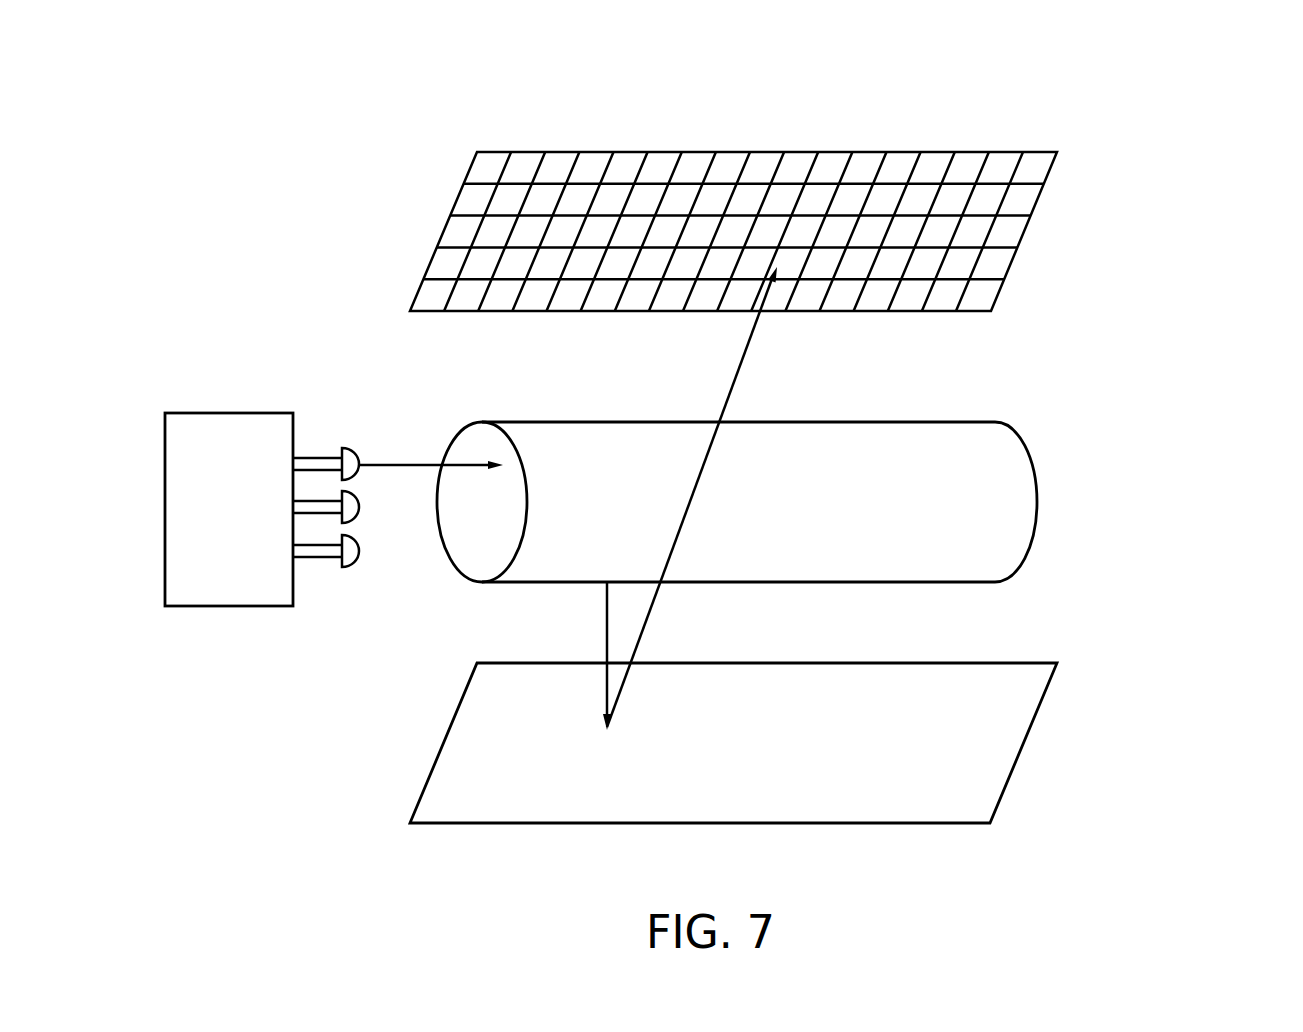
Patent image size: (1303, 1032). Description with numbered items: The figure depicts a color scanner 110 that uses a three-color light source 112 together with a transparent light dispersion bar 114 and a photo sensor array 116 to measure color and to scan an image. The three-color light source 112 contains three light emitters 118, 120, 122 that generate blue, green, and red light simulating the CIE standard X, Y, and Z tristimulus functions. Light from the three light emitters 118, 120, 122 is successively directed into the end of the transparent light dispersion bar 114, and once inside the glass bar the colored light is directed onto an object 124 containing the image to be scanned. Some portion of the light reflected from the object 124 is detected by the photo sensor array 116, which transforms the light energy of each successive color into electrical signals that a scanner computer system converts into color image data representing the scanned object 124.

The color scanner 110 is at (1202, 70).
The three-color light source 112 is at (180, 413).
The transparent light dispersion bar 114 is at (1012, 428).
The photo sensor array 116 is at (1023, 152).
The light emitter 118 is at (349, 448).
The light emitter 120 is at (363, 505).
The light emitter 122 is at (365, 562).
The object 124 is at (1023, 663).